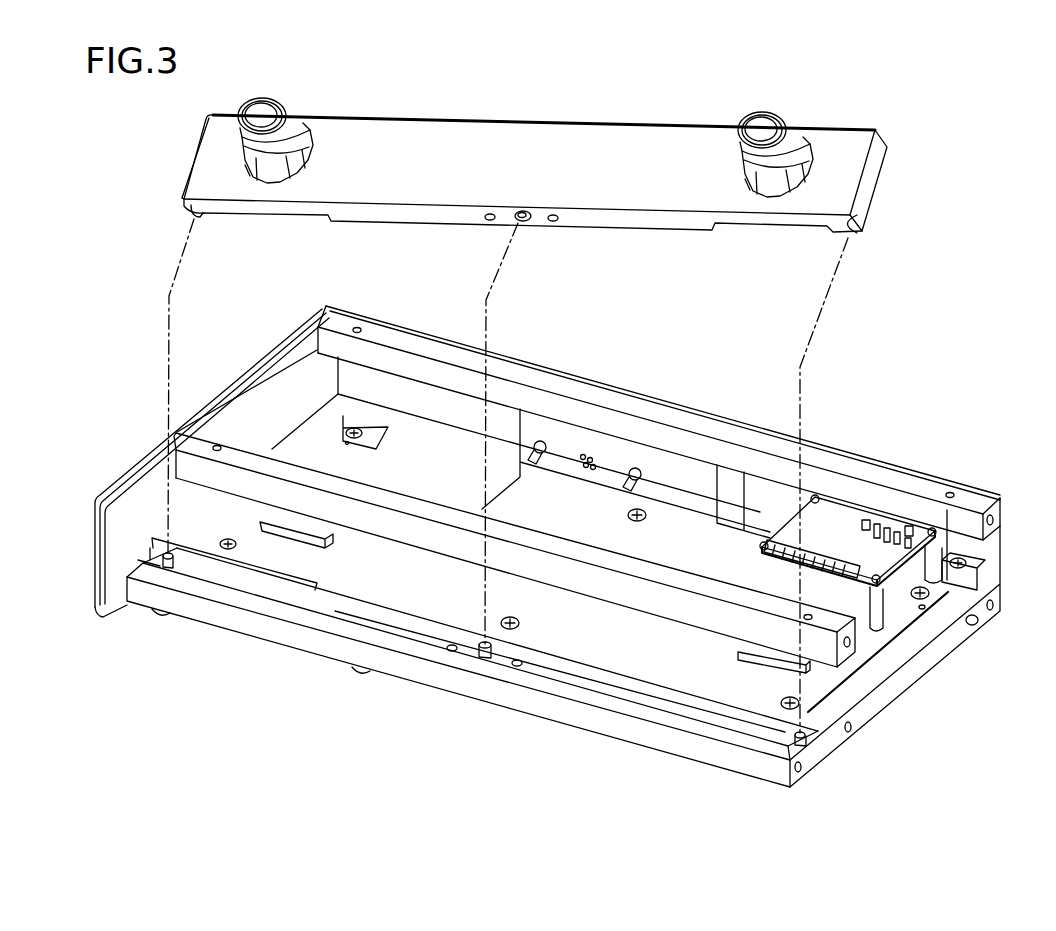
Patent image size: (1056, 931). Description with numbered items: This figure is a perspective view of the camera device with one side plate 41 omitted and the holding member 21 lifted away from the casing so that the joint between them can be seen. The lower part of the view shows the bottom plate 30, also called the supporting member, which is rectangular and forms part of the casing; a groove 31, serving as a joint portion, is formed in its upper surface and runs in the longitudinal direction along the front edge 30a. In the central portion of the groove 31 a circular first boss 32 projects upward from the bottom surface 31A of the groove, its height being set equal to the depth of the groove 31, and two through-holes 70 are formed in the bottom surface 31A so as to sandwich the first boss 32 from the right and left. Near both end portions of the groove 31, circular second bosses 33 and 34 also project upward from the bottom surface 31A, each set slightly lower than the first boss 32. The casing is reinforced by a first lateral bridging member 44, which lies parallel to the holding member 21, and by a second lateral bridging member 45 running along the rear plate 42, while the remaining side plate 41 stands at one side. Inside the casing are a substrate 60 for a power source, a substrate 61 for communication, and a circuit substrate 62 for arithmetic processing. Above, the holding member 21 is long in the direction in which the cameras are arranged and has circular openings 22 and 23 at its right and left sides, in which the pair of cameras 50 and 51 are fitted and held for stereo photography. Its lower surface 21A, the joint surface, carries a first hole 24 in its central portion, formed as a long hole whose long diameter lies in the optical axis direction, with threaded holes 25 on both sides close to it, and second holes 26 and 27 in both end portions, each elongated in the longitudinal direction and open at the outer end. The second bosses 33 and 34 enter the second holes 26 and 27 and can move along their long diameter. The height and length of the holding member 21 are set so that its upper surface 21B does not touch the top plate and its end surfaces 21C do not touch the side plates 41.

The holding member 21 is at (549, 119).
The lower surface (joint surface) of the holding member 21A is at (642, 220).
The upper surface of the holding member 21B is at (660, 124).
The end surfaces of the holding member 21C is at (197, 151).
The circular opening 22 is at (303, 178).
The circular opening 23 is at (790, 193).
The first hole 24 is at (521, 222).
The threaded holes 25 is at (490, 221).
The second hole 26 is at (197, 218).
The second hole 27 is at (852, 236).
The bottom plate (supporting member) 30 is at (908, 699).
The front edge of the bottom plate 30a is at (614, 719).
The groove (joint portion) 31 is at (304, 609).
The bottom surface of the groove 31A is at (372, 621).
The first boss 32 is at (484, 659).
The second boss 33 is at (163, 570).
The second boss 34 is at (795, 740).
The side plate 41 is at (157, 446).
The rear plate 42 is at (1002, 555).
The first lateral bridging member 44 is at (558, 545).
The second lateral bridging member 45 is at (697, 419).
The camera 50 is at (290, 97).
The camera 51 is at (782, 108).
The substrate for a power source 60 is at (626, 458).
The substrate for communication 61 is at (832, 517).
The circuit substrate for arithmetic processing 62 is at (540, 495).
The through-holes 70 is at (446, 645).